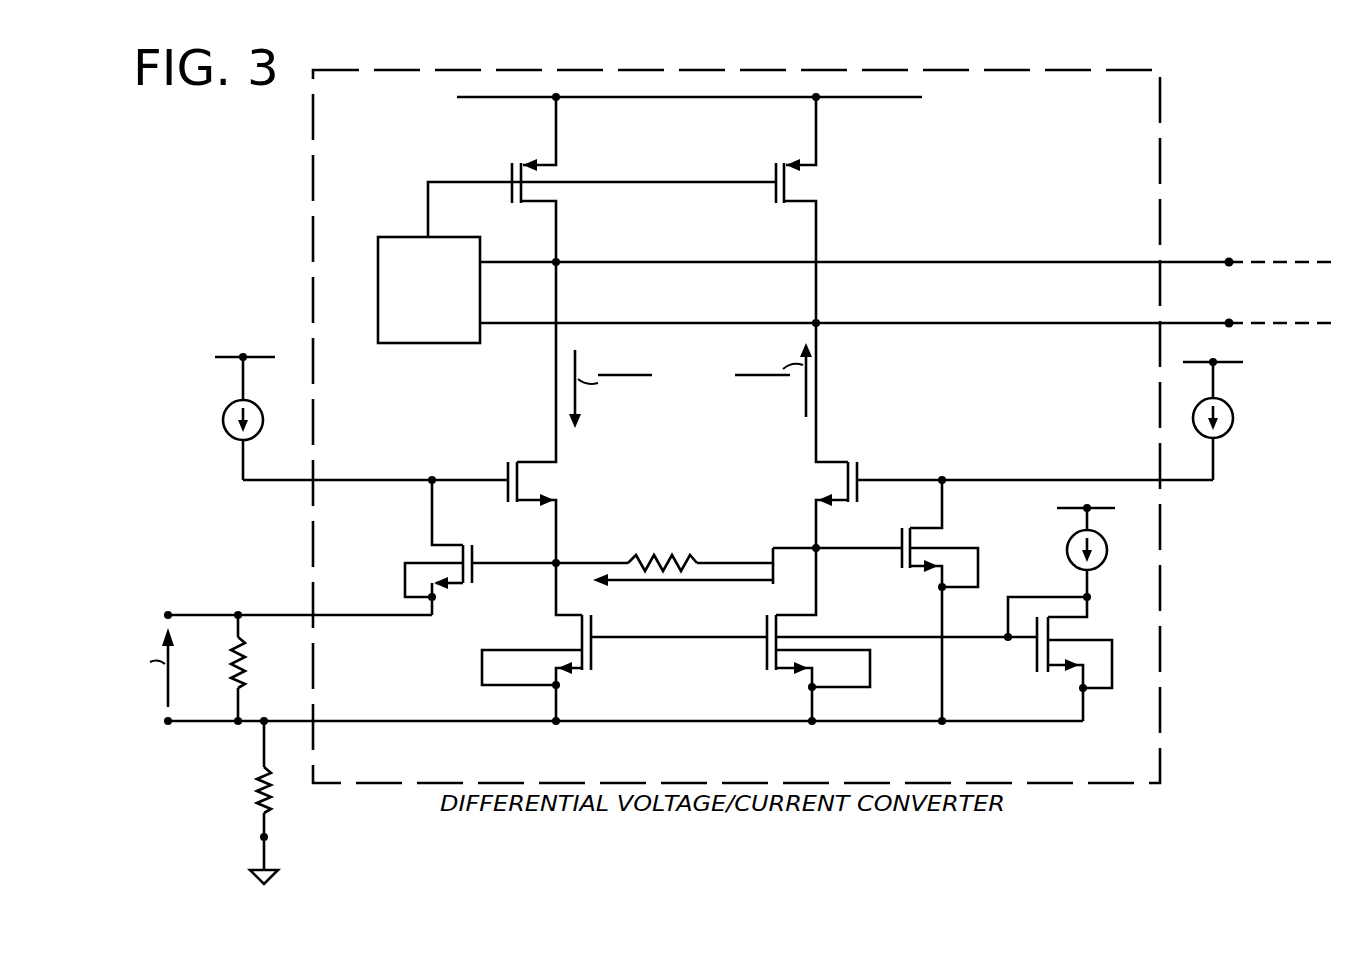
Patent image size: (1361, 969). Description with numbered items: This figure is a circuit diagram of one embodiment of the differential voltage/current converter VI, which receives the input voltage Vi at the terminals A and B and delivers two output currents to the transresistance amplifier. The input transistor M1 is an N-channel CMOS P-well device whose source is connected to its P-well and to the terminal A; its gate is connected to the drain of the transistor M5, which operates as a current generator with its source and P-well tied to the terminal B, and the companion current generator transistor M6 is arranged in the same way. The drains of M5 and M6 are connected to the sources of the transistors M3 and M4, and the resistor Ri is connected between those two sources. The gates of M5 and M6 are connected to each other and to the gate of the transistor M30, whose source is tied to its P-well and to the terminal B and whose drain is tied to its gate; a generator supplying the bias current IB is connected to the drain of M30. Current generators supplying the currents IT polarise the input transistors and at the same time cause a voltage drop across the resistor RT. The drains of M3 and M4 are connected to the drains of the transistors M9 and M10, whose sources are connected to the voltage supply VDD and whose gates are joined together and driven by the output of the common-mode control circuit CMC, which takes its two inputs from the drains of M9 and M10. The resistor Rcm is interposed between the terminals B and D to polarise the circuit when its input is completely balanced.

The differential voltage/current converter VI is at (945, 68).
The common-mode control circuit CMC is at (400, 240).
The input transistor M1 is at (443, 546).
The transistor M3 is at (540, 462).
The transistor M4 is at (826, 470).
The current generator transistor M5 is at (556, 620).
The current generator transistor M6 is at (790, 613).
The transistor M9 is at (548, 190).
The transistor M10 is at (810, 200).
The transistor M30 is at (1070, 622).
The resistor Ri is at (651, 554).
The resistor RT is at (243, 666).
The resistor Rcm is at (258, 798).
The current IT is at (223, 421).
The current IB is at (1108, 548).
The voltage supply VDD is at (687, 97).
The input voltage Vi is at (687, 584).
The terminal A is at (170, 612).
The terminal B is at (170, 724).
The terminal D is at (268, 838).